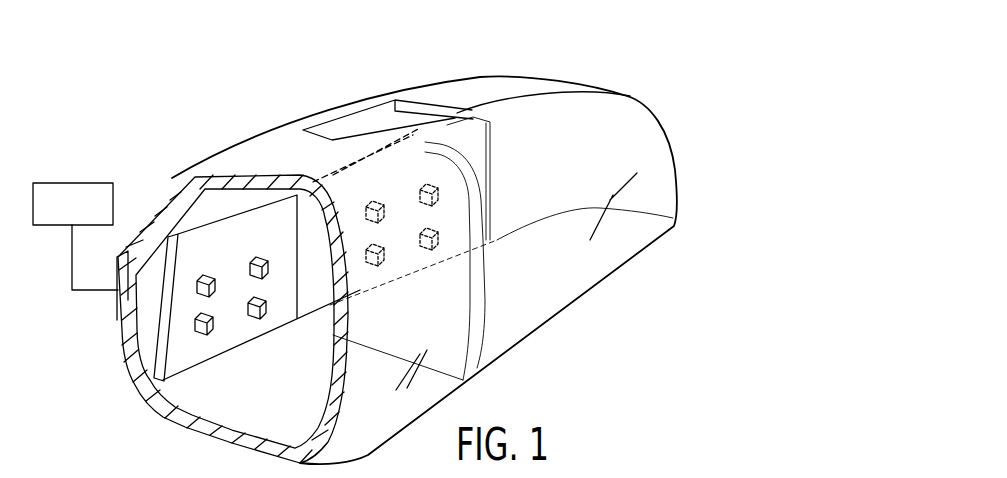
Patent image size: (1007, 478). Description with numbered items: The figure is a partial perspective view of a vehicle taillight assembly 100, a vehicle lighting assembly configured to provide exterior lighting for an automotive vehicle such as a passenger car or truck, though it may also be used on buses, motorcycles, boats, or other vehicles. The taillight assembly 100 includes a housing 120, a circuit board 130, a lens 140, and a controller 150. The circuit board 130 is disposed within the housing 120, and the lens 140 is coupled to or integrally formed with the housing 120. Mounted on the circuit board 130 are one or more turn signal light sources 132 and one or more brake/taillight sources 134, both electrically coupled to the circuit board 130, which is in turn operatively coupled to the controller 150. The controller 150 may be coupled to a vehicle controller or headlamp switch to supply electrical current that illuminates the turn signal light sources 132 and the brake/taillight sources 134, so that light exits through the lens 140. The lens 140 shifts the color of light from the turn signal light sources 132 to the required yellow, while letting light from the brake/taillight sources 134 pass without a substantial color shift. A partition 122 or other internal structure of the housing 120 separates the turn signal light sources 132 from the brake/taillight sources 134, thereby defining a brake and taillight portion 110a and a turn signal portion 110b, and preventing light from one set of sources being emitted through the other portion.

The vehicle taillight assembly 100 is at (594, 46).
The brake and taillight portion 110a is at (586, 259).
The turn signal portion 110b is at (459, 331).
The housing 120 is at (263, 143).
The partition 122 is at (303, 235).
The circuit board 130 is at (178, 358).
The turn signal light sources 132 is at (216, 291).
The brake/taillight sources 134 is at (400, 203).
The lens 140 is at (613, 117).
The controller 150 is at (58, 215).